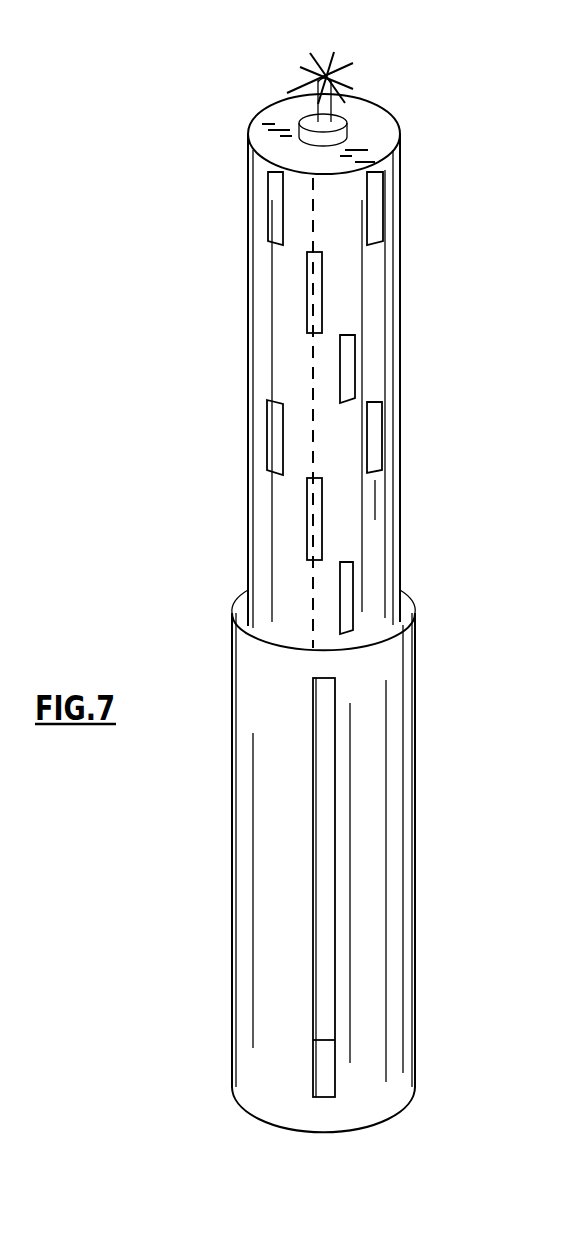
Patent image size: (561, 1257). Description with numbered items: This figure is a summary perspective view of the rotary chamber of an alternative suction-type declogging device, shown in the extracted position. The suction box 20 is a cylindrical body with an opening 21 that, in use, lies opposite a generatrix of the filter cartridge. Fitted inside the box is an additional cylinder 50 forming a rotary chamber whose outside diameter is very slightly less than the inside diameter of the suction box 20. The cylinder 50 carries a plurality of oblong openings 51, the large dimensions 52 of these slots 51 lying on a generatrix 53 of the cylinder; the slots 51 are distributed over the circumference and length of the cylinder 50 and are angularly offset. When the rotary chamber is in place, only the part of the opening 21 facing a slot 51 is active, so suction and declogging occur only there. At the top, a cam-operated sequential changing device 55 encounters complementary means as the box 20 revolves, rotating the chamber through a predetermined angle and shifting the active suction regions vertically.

The suction box 20 is at (386, 810).
The opening 21 is at (333, 940).
The cylinder 50 is at (400, 258).
The oblong openings 51 is at (350, 577).
The large dimensions 52 is at (376, 376).
The generatrix 53 is at (312, 352).
The cam-operated sequential changing device 55 is at (302, 67).